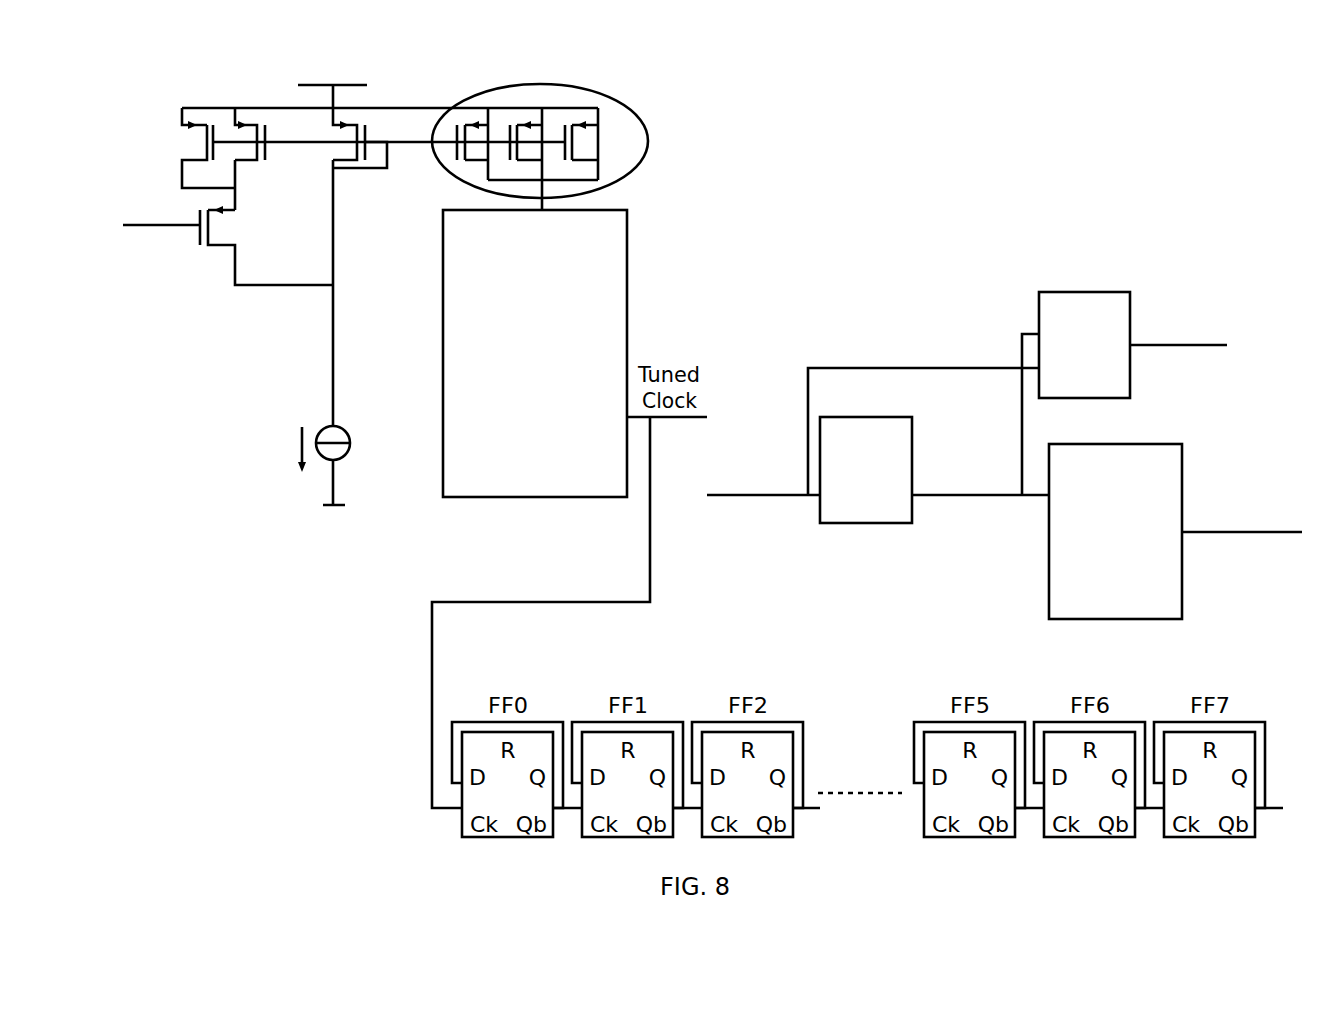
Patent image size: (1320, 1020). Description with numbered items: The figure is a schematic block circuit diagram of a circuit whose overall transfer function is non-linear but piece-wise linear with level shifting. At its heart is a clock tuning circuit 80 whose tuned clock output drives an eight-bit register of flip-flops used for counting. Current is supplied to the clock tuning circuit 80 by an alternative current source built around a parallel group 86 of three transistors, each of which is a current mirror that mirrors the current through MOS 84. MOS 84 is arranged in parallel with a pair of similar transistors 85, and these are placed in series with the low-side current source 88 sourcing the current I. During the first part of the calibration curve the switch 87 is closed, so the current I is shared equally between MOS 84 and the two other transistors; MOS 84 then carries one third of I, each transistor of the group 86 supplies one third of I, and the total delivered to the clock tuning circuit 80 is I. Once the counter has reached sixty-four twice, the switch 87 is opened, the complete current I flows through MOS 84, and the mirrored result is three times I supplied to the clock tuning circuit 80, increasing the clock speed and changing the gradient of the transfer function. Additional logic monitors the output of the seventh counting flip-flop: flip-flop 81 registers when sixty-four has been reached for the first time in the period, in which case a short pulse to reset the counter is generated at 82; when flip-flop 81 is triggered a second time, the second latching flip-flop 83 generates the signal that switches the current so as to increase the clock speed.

The clock tuning circuit 80 is at (520, 458).
The flip-flop 81 is at (863, 524).
The short pulse generator 82 is at (1048, 560).
The second latching flip-flop 83 is at (1072, 291).
The MOS transistor 84 is at (377, 140).
The pair of similar transistors 85 is at (233, 137).
The parallel group of three transistors 86 is at (649, 142).
The switch 87 is at (227, 247).
The current source 88 is at (313, 463).